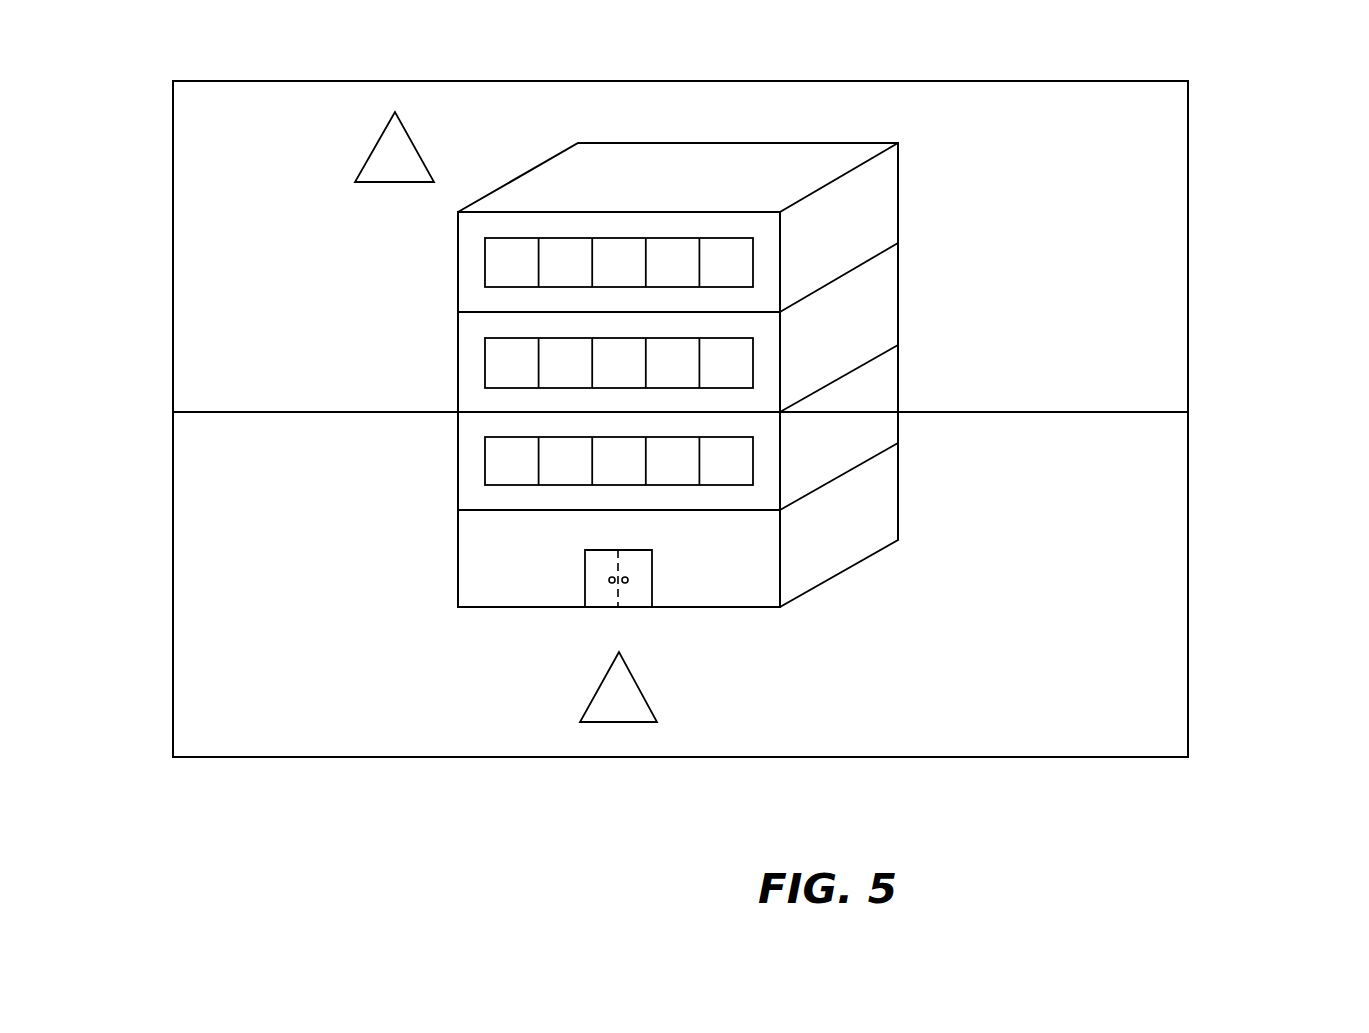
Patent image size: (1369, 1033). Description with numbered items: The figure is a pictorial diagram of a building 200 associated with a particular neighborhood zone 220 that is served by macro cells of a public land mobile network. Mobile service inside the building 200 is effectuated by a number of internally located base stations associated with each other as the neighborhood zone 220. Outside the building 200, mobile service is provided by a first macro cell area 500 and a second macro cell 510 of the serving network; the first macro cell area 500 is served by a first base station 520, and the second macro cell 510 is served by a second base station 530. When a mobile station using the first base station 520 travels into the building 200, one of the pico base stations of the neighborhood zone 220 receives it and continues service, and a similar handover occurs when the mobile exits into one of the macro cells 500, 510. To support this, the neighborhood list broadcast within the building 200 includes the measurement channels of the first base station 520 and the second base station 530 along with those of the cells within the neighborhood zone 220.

The building 200 is at (905, 193).
The neighborhood zone 220 is at (743, 173).
The first macro cell area 500 is at (1193, 611).
The second macro cell 510 is at (1193, 218).
The first base station 520 is at (617, 723).
The second base station 530 is at (378, 142).